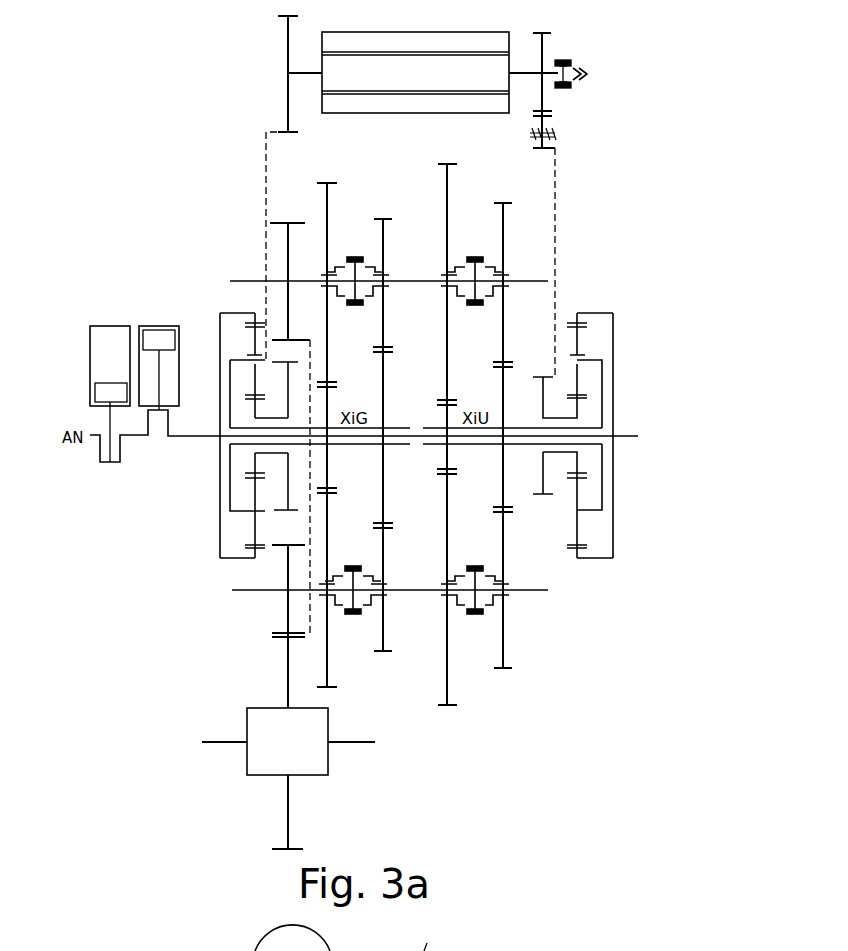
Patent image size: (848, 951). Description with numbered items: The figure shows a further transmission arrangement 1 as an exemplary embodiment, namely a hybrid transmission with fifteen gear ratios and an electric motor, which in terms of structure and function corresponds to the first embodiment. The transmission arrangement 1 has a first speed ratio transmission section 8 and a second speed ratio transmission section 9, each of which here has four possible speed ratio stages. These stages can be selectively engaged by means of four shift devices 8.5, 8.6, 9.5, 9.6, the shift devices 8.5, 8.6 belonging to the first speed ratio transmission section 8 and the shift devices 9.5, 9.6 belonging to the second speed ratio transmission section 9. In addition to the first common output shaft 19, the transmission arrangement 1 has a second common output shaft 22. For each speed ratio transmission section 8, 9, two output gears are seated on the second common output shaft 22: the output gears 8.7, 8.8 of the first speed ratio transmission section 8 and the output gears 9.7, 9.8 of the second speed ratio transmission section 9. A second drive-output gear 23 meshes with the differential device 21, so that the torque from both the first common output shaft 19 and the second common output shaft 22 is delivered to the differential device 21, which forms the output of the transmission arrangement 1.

The transmission arrangement 1 is at (626, 121).
The first speed ratio transmission section 8 is at (520, 710).
The shift device 8.5 is at (480, 567).
The shift device 8.6 is at (475, 258).
The output gear 8.7 is at (503, 203).
The output gear 8.8 is at (447, 164).
The second speed ratio transmission section 9 is at (395, 692).
The shift device 9.5 is at (352, 567).
The shift device 9.6 is at (355, 258).
The output gear 9.7 is at (383, 219).
The output gear 9.8 is at (327, 183).
The first common output shaft 19 is at (250, 592).
The differential device 21 is at (255, 775).
The second common output shaft 22 is at (248, 281).
The second drive-output gear 23 is at (288, 223).